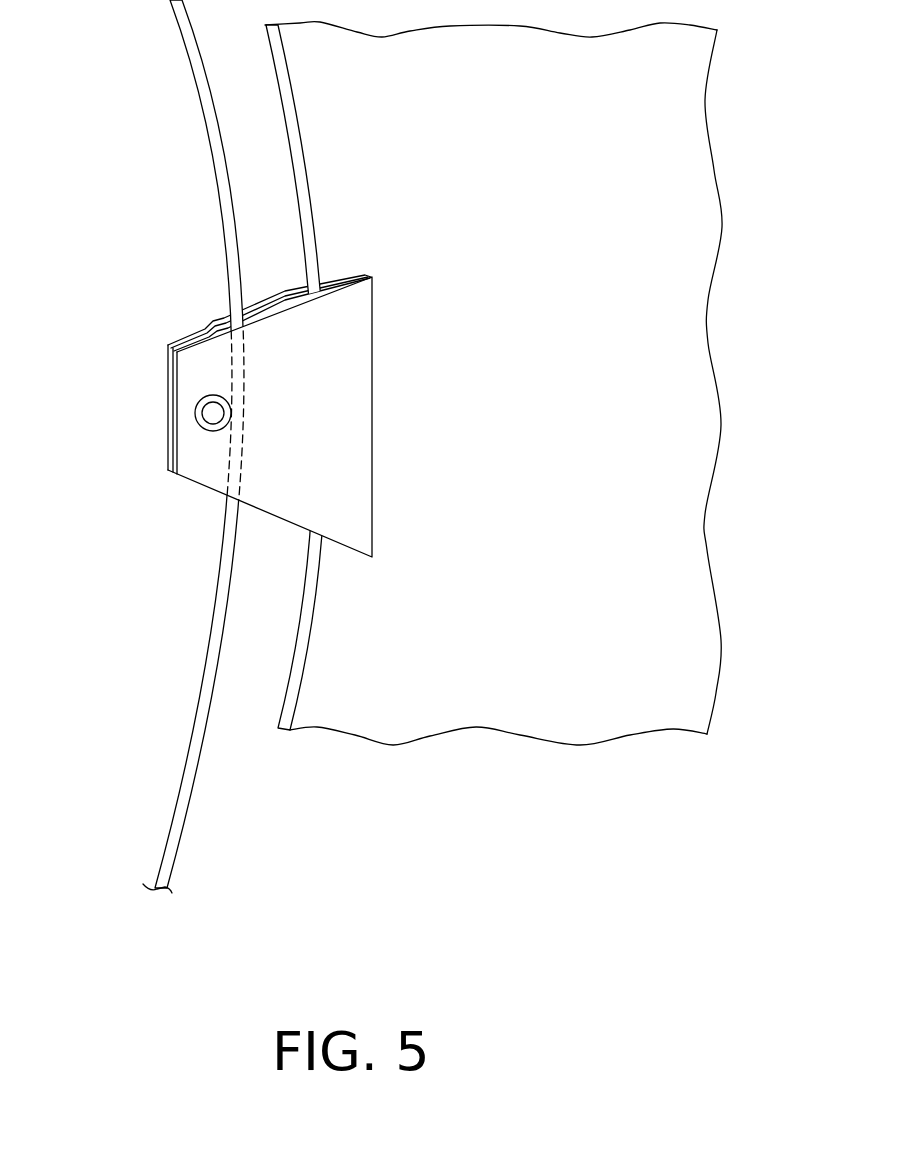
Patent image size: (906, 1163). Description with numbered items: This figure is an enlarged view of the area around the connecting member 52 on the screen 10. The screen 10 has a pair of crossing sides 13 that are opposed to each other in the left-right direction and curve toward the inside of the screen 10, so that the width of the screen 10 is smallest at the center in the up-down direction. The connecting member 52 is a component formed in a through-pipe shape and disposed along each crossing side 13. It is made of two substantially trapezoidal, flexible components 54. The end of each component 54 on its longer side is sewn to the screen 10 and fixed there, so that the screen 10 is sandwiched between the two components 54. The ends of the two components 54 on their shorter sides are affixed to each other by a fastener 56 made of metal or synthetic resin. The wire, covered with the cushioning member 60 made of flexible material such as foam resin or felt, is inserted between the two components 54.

The screen 10 is at (685, 230).
The crossing side 13 is at (302, 142).
The connecting member 52 is at (166, 317).
The component 54 is at (278, 293).
The fastener 56 is at (197, 411).
The cushioning member 60 is at (202, 715).